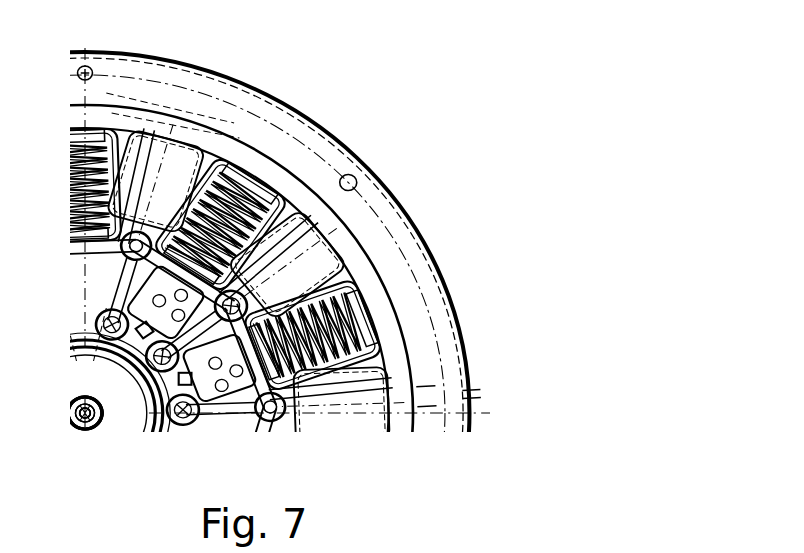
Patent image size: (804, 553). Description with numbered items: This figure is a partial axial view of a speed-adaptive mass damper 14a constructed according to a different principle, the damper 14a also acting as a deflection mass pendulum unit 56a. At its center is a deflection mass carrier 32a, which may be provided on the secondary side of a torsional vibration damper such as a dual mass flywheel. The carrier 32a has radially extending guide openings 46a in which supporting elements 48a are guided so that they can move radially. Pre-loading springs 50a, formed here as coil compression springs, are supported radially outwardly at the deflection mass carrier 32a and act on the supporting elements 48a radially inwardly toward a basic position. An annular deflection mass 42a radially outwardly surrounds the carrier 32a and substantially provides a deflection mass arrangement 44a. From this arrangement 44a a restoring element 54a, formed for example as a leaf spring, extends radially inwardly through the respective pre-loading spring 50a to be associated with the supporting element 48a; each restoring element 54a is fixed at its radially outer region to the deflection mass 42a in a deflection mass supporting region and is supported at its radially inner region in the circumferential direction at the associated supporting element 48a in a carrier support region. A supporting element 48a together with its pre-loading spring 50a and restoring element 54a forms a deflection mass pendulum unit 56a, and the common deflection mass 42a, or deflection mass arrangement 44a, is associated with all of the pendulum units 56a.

The mass damper 14a is at (440, 158).
The deflection mass arrangement 44a is at (442, 228).
The deflection mass 42a is at (455, 366).
The guide openings 46a is at (383, 330).
The pre-loading springs 50a is at (335, 372).
The restoring element 54a is at (235, 185).
The deflection mass pendulum unit 56a is at (343, 392).
The supporting elements 48a is at (145, 397).
The deflection mass carrier 32a is at (238, 420).